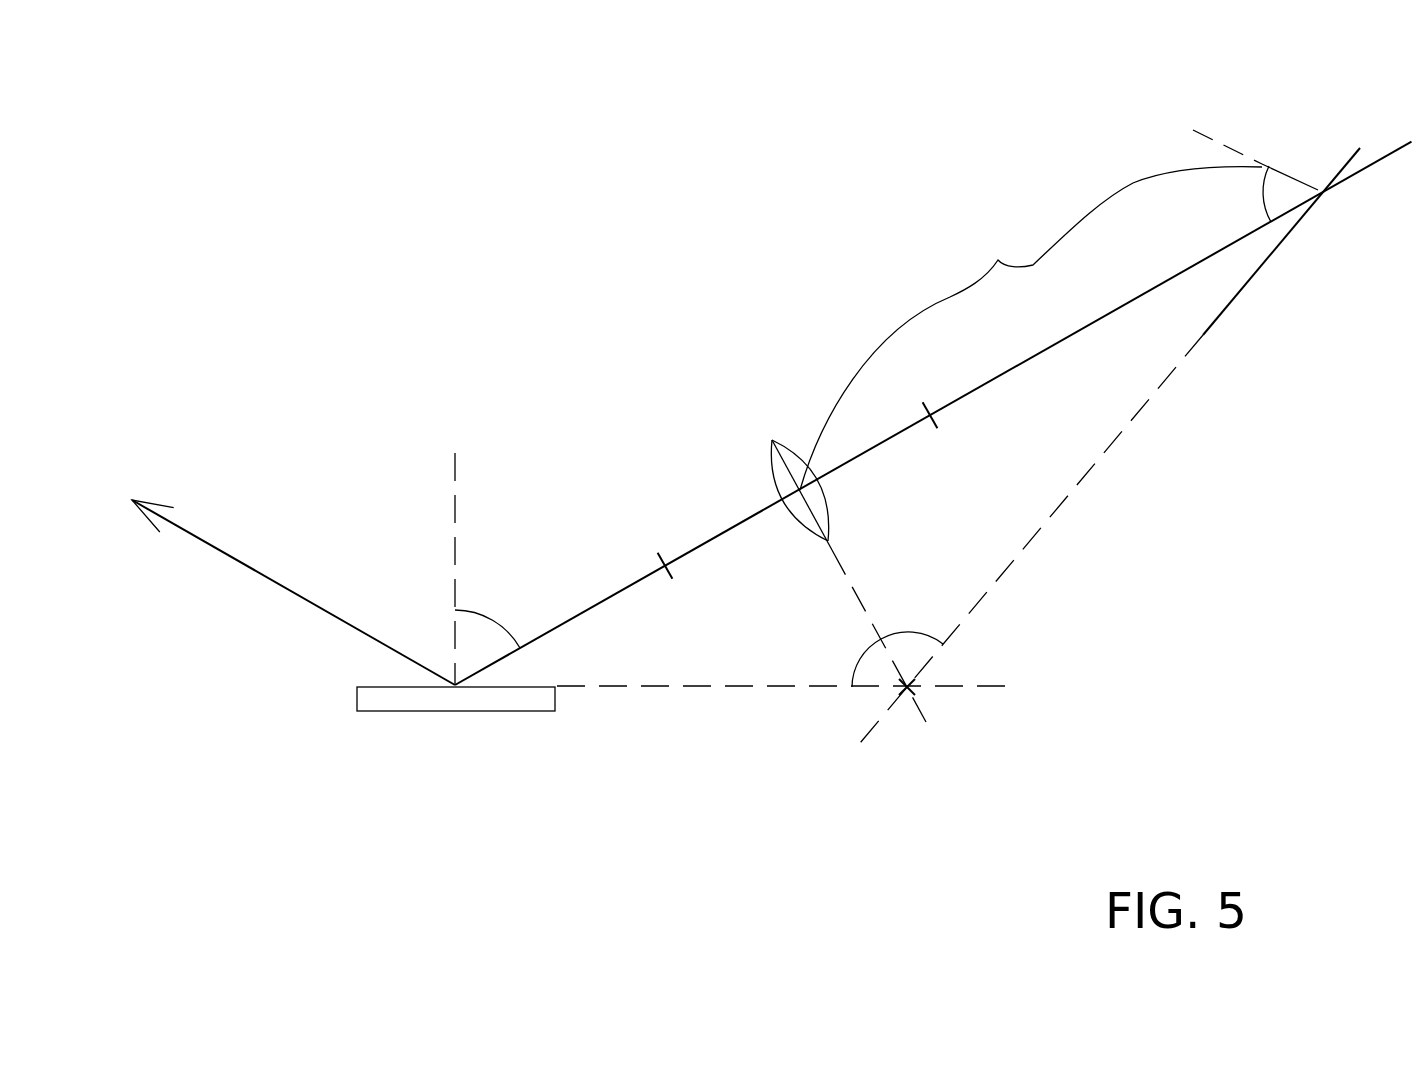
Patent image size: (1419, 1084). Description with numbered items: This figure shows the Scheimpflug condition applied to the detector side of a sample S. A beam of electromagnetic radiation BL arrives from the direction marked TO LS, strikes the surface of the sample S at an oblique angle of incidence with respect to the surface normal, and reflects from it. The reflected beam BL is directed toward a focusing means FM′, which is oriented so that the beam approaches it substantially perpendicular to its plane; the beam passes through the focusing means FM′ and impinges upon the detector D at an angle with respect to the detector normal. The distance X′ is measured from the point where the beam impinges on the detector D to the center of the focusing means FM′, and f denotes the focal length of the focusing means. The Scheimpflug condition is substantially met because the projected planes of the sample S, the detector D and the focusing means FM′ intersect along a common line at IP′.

The beam of electromagnetic radiation BL is at (772, 413).
The direction to light source TO LS is at (171, 492).
The sample S is at (456, 741).
The detector D is at (1107, 408).
The focusing means FM′ is at (759, 557).
The distance from the detector to the center of the focusing means X′ is at (1031, 328).
The focal length f is at (748, 448).
The intersection line IP′ is at (987, 717).